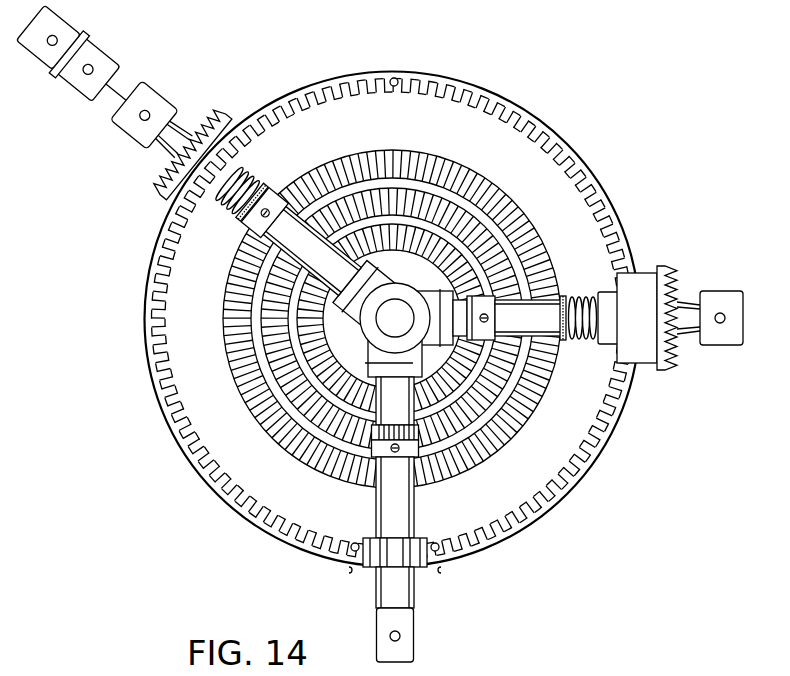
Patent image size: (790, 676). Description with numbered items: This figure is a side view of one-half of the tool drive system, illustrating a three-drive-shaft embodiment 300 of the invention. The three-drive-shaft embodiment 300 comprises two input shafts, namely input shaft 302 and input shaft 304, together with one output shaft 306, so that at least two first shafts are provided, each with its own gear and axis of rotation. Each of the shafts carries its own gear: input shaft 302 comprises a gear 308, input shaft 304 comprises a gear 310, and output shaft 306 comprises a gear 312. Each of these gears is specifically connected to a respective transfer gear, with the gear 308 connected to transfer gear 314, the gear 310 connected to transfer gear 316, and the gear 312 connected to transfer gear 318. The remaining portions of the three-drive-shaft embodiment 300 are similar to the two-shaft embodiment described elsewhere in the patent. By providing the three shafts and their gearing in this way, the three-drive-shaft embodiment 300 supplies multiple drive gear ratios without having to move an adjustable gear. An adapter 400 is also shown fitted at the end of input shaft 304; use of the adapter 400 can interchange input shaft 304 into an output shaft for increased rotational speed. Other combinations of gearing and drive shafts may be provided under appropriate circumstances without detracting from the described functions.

The three-drive-shaft embodiment 300 is at (212, 517).
The input shaft 302 is at (747, 349).
The input shaft 304 is at (168, 88).
The output shaft 306 is at (412, 623).
The gear 308 is at (490, 300).
The gear 310 is at (248, 254).
The gear 312 is at (372, 437).
The transfer gear 314 is at (452, 400).
The transfer gear 316 is at (547, 390).
The transfer gear 318 is at (490, 412).
The adapter 400 is at (108, 60).